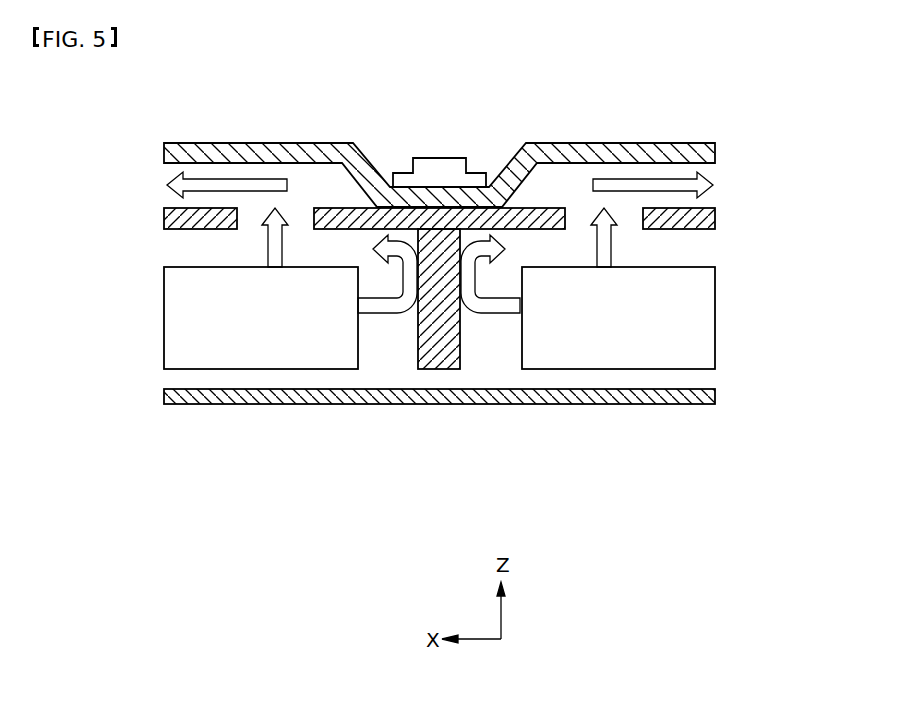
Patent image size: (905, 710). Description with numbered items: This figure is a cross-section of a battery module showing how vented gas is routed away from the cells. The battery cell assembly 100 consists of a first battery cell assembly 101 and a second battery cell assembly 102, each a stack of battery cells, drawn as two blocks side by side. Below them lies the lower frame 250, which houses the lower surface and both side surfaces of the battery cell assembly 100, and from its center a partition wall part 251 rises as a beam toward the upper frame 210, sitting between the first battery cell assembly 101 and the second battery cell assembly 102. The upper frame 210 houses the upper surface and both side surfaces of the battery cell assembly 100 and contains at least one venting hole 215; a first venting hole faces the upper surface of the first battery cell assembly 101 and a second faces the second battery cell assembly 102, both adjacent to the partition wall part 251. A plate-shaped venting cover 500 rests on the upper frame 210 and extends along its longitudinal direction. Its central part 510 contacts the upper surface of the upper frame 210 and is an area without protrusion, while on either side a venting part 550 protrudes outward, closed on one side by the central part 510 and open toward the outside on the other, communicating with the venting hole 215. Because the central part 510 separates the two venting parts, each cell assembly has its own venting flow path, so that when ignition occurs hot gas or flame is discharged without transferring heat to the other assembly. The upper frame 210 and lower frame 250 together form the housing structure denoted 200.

The battery cell assembly 100 is at (480, 465).
The first battery cell assembly 101 is at (253, 358).
The second battery cell assembly 102 is at (712, 324).
The housing 200 is at (503, 313).
The upper frame 210 is at (712, 220).
The venting hole 215 is at (299, 217).
The lower frame 250 is at (712, 396).
The partition wall part 251 is at (434, 358).
The venting cover 500 is at (503, 359).
The central part 510 is at (490, 187).
The venting part 550 is at (716, 150).